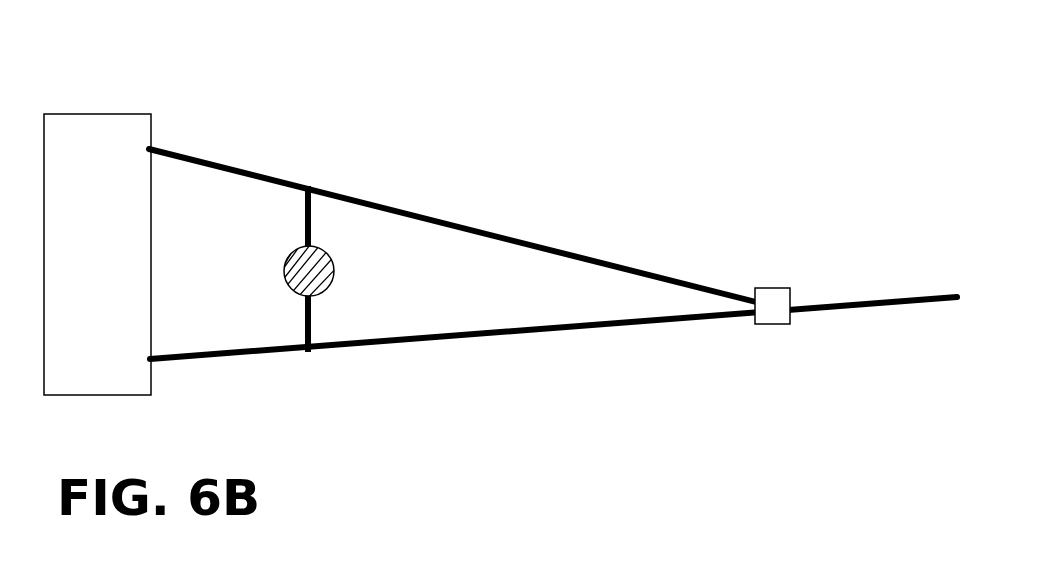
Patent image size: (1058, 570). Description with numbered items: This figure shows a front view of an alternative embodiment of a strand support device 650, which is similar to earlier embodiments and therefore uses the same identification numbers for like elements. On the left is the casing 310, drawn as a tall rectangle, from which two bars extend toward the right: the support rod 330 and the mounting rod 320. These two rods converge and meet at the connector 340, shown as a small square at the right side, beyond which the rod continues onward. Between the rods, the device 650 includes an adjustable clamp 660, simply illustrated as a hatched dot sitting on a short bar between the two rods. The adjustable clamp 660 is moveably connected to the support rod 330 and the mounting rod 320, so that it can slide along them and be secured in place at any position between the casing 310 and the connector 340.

The casing 310 is at (92, 114).
The mounting rod 320 is at (471, 342).
The support rod 330 is at (300, 184).
The connector 340 is at (764, 288).
The strand support device 650 is at (767, 97).
The adjustable clamp 660 is at (284, 268).